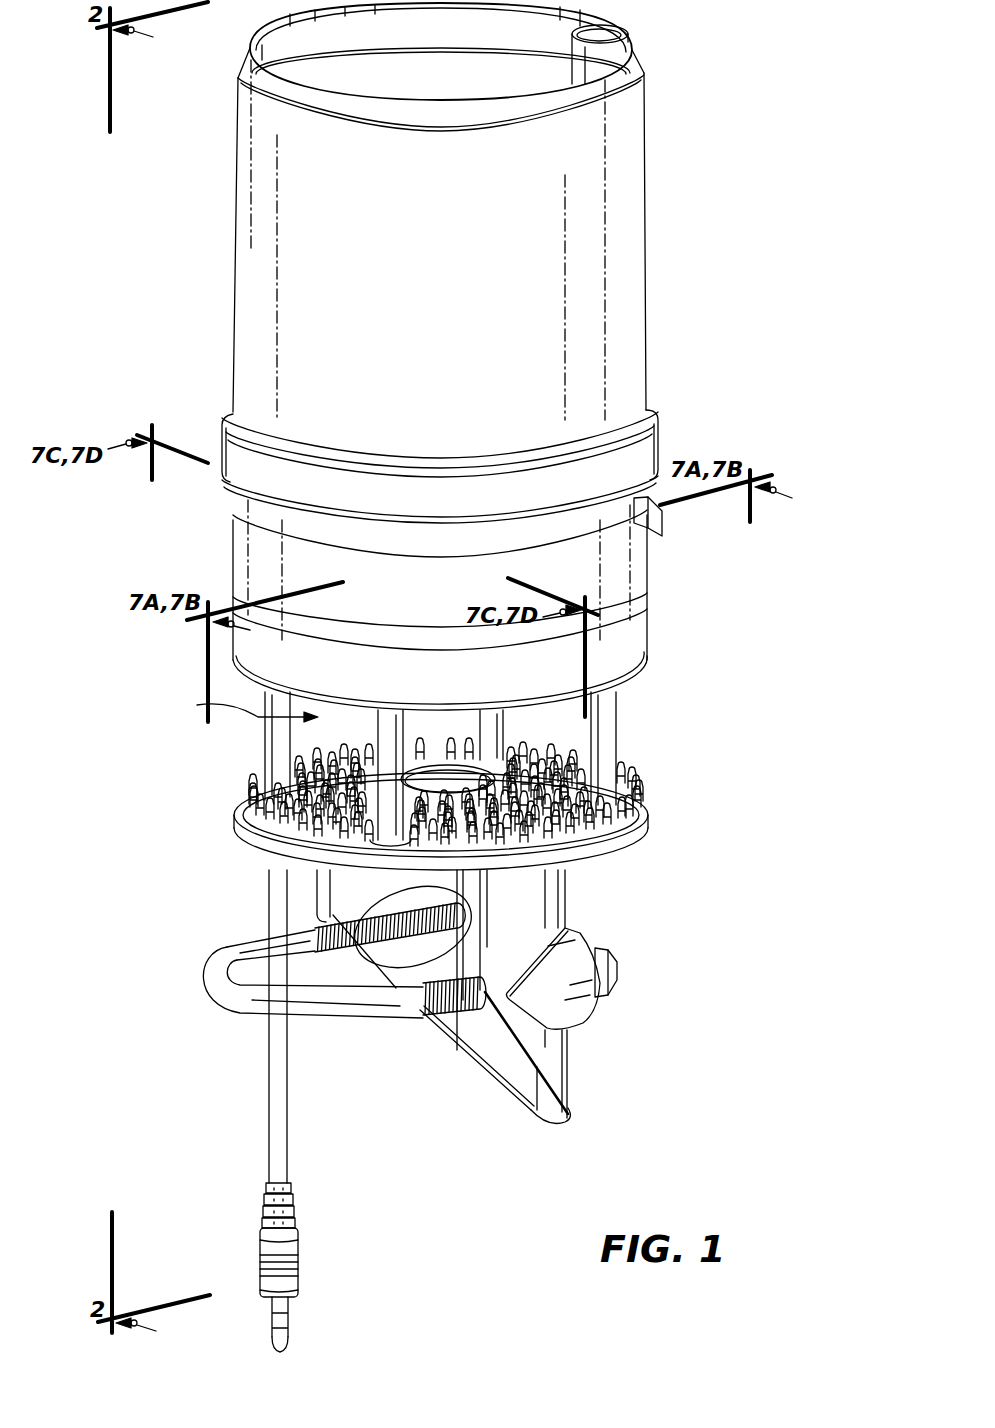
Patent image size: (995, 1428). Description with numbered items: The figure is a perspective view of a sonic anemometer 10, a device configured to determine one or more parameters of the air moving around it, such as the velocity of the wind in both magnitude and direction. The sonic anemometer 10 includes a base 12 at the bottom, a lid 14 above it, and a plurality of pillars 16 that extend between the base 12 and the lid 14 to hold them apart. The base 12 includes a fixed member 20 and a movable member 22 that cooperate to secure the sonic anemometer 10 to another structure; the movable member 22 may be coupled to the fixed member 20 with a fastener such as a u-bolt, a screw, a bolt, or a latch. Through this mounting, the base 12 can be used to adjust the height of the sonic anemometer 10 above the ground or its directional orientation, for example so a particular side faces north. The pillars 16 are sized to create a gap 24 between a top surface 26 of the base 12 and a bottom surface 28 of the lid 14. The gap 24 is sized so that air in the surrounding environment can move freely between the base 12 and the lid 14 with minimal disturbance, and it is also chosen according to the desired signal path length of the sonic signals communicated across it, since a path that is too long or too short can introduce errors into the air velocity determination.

The sonic anemometer 10 is at (660, 185).
The base 12 is at (590, 843).
The lid 14 is at (635, 563).
The pillars 16 is at (503, 718).
The fixed member 20 is at (553, 917).
The movable member 22 is at (355, 1003).
The gap 24 is at (243, 708).
The top surface 26 is at (565, 822).
The bottom surface 28 is at (633, 676).